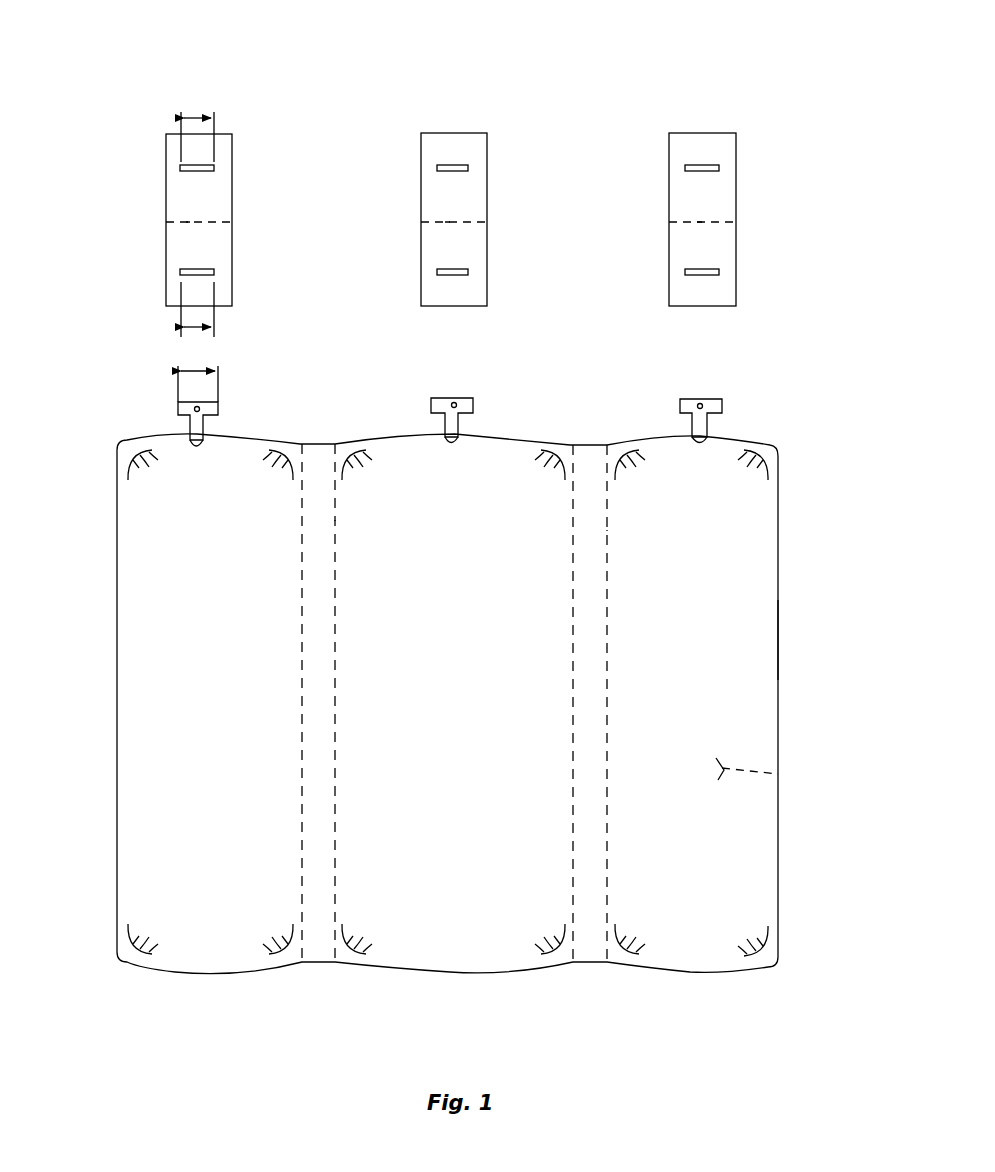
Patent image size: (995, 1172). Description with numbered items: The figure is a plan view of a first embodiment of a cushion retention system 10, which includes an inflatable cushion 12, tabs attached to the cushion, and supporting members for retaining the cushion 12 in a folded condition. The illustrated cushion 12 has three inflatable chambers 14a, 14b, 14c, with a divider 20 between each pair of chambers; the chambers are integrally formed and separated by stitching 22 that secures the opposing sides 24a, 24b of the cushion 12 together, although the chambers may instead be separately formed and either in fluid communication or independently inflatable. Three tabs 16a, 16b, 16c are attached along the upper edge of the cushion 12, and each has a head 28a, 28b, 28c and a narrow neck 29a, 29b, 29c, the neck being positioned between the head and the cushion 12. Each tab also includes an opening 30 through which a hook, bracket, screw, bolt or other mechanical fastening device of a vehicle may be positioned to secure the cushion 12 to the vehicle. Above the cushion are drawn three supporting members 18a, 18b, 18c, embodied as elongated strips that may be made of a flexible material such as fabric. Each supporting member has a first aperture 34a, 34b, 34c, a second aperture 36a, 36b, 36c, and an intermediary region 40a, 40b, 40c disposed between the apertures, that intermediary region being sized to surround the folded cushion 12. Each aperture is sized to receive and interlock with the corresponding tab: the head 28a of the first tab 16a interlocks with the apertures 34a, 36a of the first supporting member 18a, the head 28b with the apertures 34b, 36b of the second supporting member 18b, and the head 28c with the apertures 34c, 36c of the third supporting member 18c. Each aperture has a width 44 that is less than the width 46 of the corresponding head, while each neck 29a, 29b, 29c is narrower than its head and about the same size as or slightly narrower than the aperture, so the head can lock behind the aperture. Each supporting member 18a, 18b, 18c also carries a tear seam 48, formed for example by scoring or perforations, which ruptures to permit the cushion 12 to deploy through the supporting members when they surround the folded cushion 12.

The cushion retention system 10 is at (160, 68).
The inflatable cushion 12 is at (104, 580).
The inflatable chamber 14a is at (225, 965).
The inflatable chamber 14b is at (448, 957).
The inflatable chamber 14c is at (694, 955).
The first tab 16a is at (270, 394).
The second tab 16b is at (498, 388).
The third tab 16c is at (735, 390).
The first supporting member 18a is at (178, 190).
The second supporting member 18b is at (432, 142).
The third supporting member 18c is at (690, 142).
The divider 20 is at (318, 950).
The stitching 22 is at (338, 518).
The opposing side 24a is at (763, 638).
The opposing side 24b is at (770, 775).
The head 28a is at (190, 410).
The head 28b is at (440, 400).
The head 28c is at (682, 403).
The narrow neck 29a is at (200, 430).
The narrow neck 29b is at (460, 425).
The narrow neck 29c is at (708, 425).
The opening 30 is at (194, 412).
The first aperture 34a is at (215, 168).
The first aperture 34b is at (478, 167).
The first aperture 34c is at (718, 168).
The second aperture 36a is at (215, 272).
The second aperture 36b is at (468, 272).
The second aperture 36c is at (718, 272).
The intermediary region 40a is at (228, 233).
The intermediary region 40b is at (480, 235).
The intermediary region 40c is at (728, 233).
The aperture width 44 is at (198, 116).
The head width 46 is at (202, 372).
The tear seam 48 is at (186, 222).